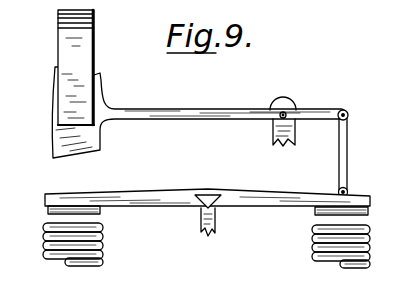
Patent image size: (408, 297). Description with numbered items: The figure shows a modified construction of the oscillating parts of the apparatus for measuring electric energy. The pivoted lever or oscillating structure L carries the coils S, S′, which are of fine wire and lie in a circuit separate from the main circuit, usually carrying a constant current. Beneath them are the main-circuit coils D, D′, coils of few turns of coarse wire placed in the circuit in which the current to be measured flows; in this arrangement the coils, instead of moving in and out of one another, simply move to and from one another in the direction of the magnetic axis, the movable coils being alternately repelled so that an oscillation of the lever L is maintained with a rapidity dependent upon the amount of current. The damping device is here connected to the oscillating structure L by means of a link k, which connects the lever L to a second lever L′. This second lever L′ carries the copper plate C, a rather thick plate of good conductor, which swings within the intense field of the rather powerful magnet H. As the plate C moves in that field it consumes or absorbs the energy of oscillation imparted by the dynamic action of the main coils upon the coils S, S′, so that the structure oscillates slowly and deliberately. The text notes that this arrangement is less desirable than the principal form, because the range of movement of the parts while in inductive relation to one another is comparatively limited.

The permanent magnet H is at (107, 57).
The copper plate C is at (53, 109).
The second lever L′ is at (227, 103).
The link k is at (366, 158).
The pivoted lever L is at (207, 204).
The coil S is at (48, 212).
The coil S′ is at (371, 212).
The main-circuit coil D is at (82, 244).
The main-circuit coil D′ is at (329, 246).